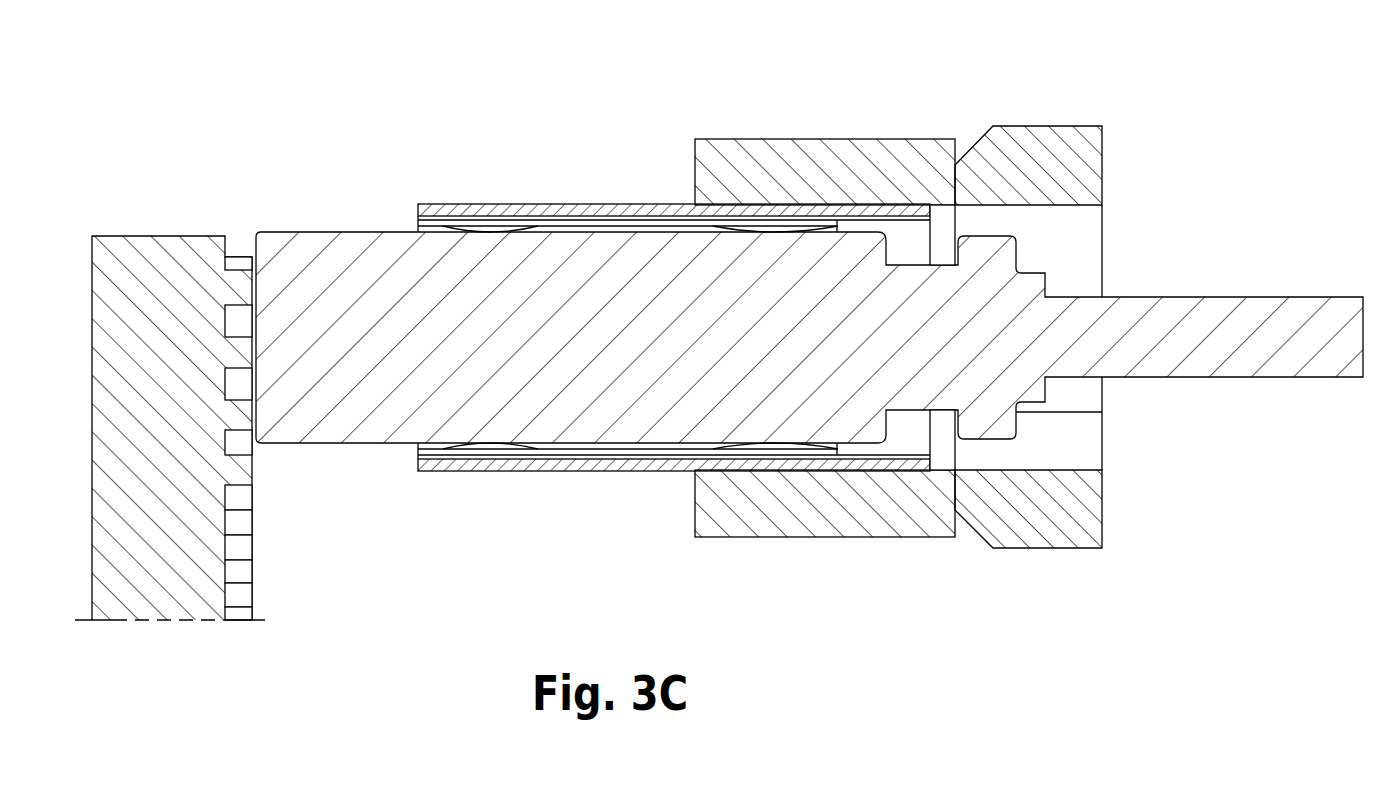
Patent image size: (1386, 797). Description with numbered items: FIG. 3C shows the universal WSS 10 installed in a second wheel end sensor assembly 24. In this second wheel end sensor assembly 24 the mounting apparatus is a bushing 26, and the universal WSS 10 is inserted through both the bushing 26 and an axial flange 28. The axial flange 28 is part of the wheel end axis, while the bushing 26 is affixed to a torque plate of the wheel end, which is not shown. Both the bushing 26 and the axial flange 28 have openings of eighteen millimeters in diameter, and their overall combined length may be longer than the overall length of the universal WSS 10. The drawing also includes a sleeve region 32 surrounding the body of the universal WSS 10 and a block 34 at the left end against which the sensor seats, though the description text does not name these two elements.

The universal WSS 10 is at (612, 443).
The second wheel end sensor assembly 24 is at (700, 88).
The bushing 26 is at (808, 139).
The axial flange 28 is at (1045, 548).
The bearing sleeve 32 is at (570, 204).
The mounting block 34 is at (175, 620).